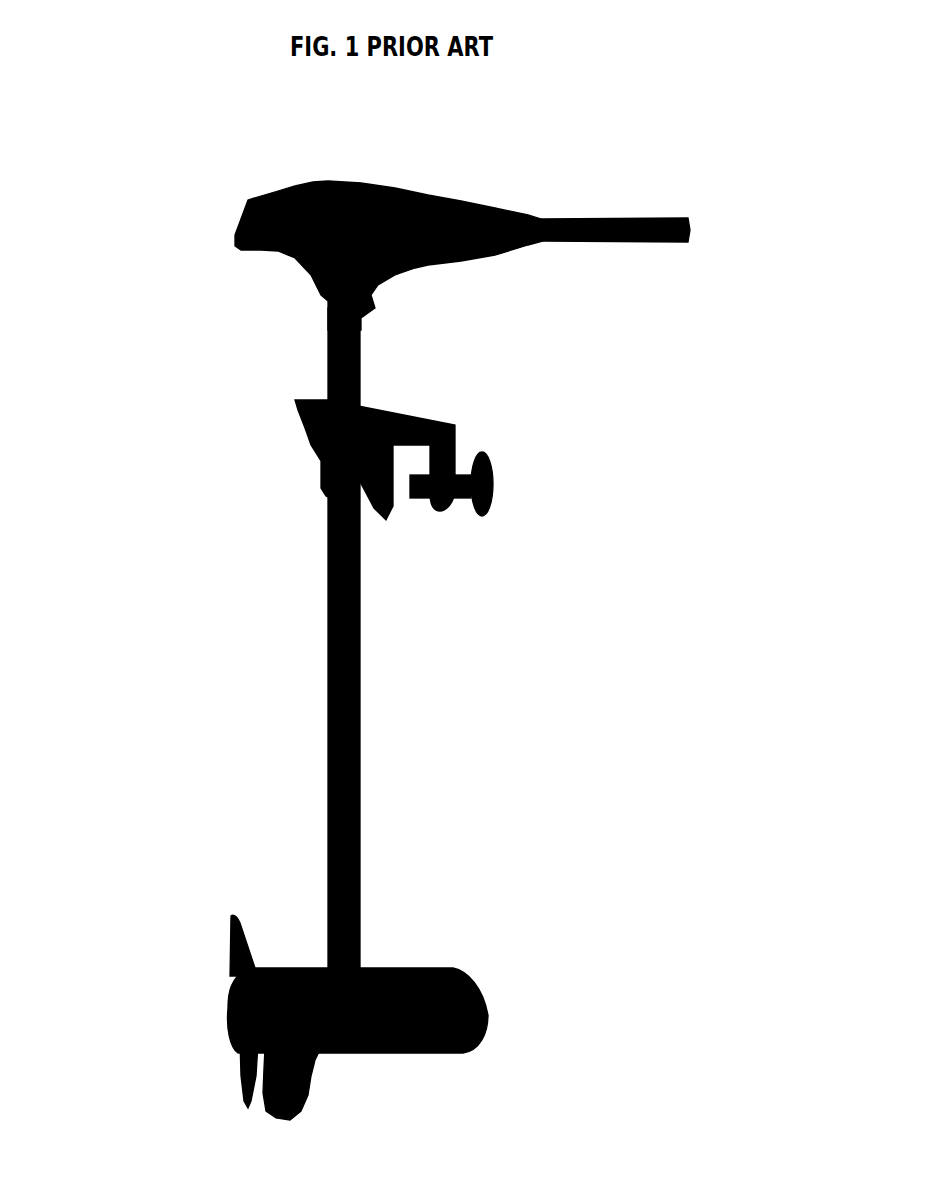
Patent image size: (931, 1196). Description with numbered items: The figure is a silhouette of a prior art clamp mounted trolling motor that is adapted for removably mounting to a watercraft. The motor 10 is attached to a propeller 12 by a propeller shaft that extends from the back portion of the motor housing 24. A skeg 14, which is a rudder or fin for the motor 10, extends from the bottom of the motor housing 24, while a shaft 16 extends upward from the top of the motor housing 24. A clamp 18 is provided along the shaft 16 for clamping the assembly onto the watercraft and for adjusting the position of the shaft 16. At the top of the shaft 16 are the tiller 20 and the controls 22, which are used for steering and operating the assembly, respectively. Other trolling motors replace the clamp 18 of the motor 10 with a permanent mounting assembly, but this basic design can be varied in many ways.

The motor 10 is at (375, 625).
The propeller 12 is at (207, 928).
The skeg 14 is at (317, 1079).
The shaft 16 is at (312, 505).
The clamp 18 is at (421, 507).
The tiller 20 is at (598, 240).
The controls 22 is at (603, 198).
The motor housing 24 is at (483, 1015).